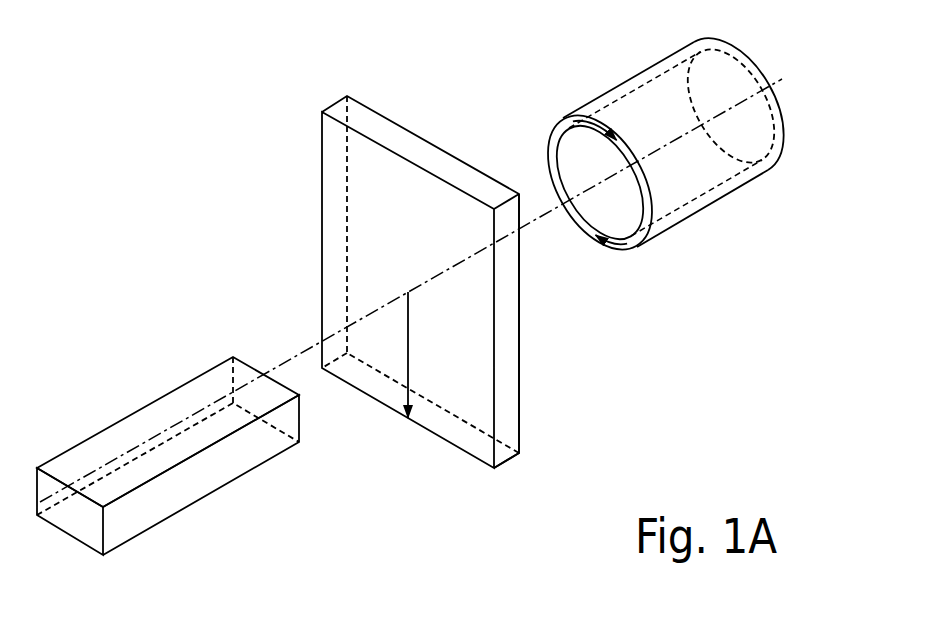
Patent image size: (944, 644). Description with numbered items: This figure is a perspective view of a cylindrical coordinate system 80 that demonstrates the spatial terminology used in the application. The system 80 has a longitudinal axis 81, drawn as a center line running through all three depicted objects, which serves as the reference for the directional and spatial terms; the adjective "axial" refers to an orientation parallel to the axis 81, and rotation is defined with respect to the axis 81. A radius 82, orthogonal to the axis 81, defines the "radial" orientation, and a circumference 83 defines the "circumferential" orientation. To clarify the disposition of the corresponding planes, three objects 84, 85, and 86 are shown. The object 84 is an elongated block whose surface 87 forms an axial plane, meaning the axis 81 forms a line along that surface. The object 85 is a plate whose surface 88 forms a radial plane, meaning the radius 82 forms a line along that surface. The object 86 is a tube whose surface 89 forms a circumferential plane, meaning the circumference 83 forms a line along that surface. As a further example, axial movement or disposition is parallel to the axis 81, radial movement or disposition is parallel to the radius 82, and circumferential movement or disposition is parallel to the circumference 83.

The cylindrical coordinate system 80 is at (280, 158).
The longitudinal axis 81 is at (771, 80).
The radius 82 is at (408, 348).
The circumference 83 is at (550, 145).
The object 84 is at (132, 542).
The object 85 is at (527, 460).
The object 86 is at (700, 222).
The surface 87 is at (127, 437).
The surface 88 is at (338, 238).
The surface 89 is at (630, 80).